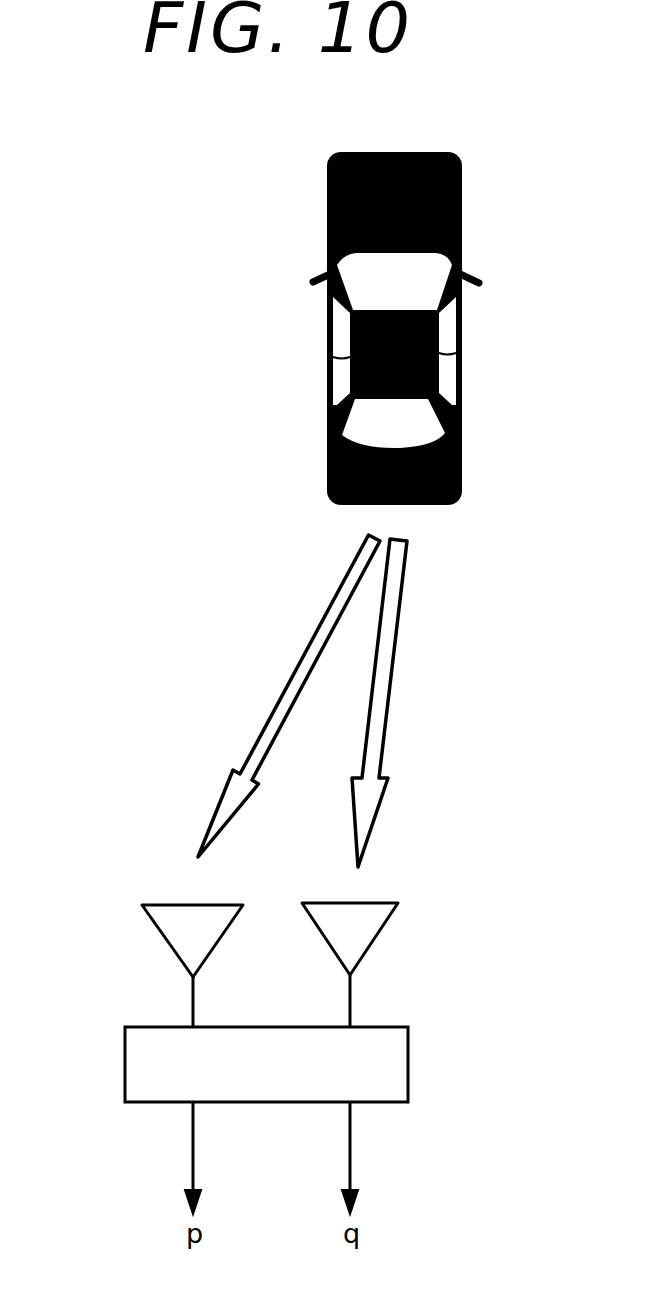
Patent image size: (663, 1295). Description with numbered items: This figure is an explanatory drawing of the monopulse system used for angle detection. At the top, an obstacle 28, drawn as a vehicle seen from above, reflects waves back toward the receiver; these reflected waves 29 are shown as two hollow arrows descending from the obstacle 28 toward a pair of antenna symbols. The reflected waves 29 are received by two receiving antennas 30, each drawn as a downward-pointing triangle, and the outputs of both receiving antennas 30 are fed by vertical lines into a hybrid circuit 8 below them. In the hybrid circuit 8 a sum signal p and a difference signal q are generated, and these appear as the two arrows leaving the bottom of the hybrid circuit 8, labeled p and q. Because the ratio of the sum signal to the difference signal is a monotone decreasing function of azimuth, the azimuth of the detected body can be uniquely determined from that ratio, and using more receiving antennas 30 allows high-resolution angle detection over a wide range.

The obstacle 28 is at (326, 221).
The reflected waves 29 is at (305, 647).
The receiving antennas 30 is at (175, 938).
The hybrid circuit 8 is at (410, 1063).